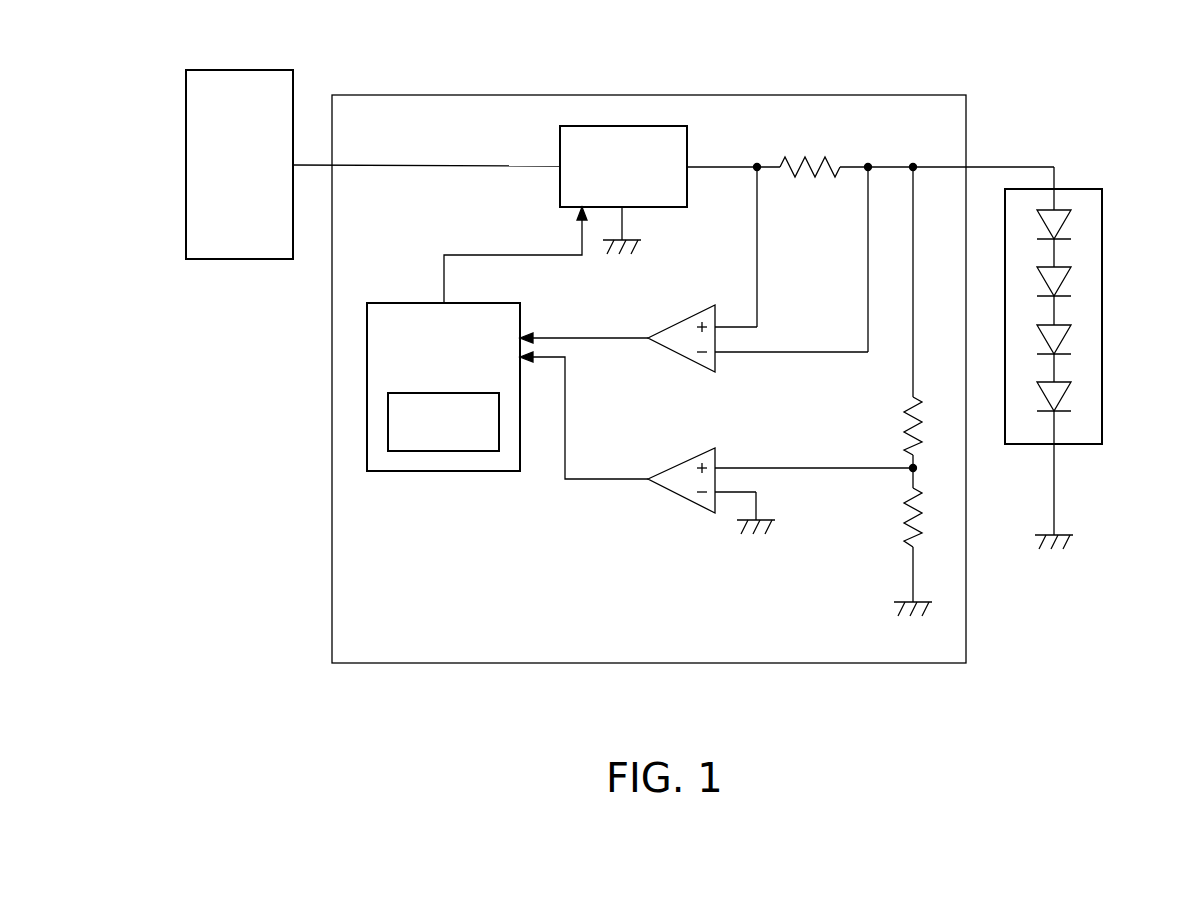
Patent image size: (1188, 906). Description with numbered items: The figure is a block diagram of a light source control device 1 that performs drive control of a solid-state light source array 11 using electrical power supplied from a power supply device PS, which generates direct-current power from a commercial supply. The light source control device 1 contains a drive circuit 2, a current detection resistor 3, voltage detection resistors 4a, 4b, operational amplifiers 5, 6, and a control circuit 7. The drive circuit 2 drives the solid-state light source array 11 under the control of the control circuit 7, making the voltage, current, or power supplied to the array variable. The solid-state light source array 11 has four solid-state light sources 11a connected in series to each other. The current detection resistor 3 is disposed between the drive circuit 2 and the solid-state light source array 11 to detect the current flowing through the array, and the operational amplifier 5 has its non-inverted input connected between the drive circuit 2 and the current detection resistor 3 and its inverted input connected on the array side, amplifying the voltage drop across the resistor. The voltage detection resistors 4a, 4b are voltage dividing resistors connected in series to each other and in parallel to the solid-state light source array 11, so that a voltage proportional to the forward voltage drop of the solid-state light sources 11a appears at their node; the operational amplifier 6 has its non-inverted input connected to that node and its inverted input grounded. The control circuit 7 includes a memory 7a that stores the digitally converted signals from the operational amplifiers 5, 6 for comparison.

The power supply device PS is at (237, 70).
The light source control device 1 is at (805, 95).
The drive circuit 2 is at (687, 138).
The current detection resistor 3 is at (833, 165).
The voltage detection resistor 4a is at (906, 399).
The voltage detection resistor 4b is at (906, 513).
The operational amplifier 5 is at (682, 318).
The operational amplifier 6 is at (682, 460).
The control circuit 7 is at (477, 364).
The memory 7a is at (447, 453).
The solid-state light source array 11 is at (1089, 342).
The solid-state light source 11a is at (1066, 228).